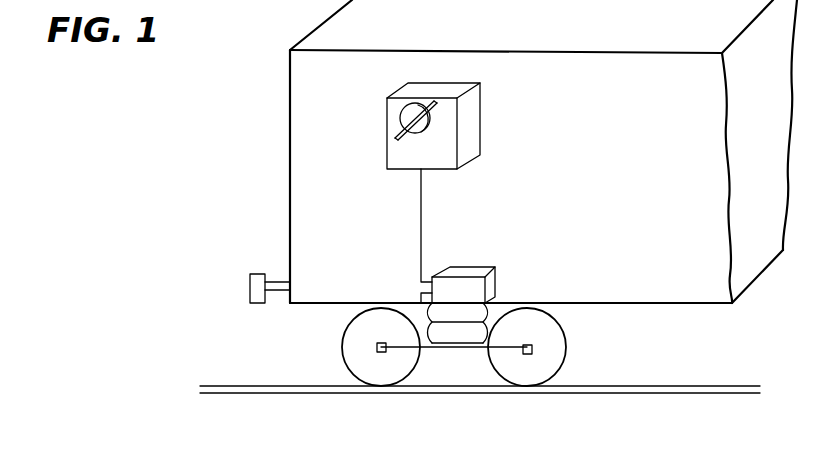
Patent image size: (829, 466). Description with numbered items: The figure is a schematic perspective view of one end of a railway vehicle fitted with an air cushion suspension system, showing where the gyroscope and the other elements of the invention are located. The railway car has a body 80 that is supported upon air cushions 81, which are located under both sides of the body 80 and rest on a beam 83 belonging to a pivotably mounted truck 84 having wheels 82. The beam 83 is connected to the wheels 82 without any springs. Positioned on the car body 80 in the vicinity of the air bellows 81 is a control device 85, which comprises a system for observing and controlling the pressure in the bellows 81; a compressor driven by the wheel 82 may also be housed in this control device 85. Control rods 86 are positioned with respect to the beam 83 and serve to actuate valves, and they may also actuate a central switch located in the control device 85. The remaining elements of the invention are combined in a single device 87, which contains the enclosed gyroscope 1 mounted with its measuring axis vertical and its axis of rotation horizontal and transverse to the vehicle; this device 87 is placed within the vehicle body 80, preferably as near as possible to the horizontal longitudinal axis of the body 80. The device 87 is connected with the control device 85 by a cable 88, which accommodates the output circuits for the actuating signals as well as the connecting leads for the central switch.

The body 80 is at (298, 163).
The control device 87 is at (447, 160).
The gyroscope 1 is at (405, 120).
The cable 88 is at (421, 206).
The control device 85 is at (484, 265).
The control rods 86 is at (424, 308).
The air cushions 81 is at (490, 310).
The truck 84 is at (440, 385).
The wheels 82 is at (518, 375).
The beam 83 is at (517, 345).